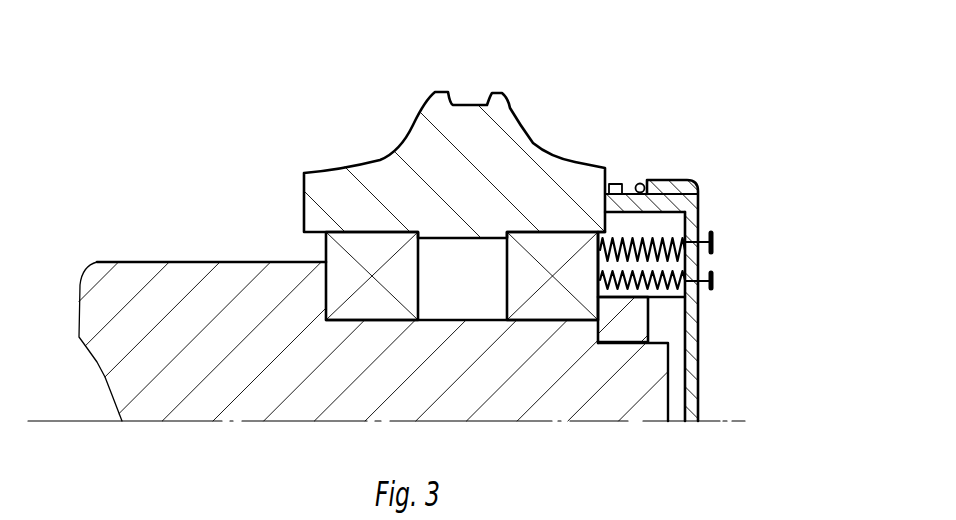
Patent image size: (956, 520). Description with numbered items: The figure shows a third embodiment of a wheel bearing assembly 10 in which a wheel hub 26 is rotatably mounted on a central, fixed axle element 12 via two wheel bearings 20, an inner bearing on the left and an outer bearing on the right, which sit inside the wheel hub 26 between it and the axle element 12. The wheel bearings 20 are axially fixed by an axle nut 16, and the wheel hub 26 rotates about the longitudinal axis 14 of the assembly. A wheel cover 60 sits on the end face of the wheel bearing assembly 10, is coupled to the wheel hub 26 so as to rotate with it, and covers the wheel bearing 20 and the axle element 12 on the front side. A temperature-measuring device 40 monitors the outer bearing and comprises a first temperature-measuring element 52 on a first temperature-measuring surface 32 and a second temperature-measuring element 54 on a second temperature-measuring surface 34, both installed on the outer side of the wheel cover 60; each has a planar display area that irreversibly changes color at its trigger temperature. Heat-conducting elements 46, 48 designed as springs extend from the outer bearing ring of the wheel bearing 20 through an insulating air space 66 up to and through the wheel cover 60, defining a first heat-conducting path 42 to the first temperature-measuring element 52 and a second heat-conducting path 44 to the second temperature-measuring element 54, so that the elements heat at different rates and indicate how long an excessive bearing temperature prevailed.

The wheel bearing assembly 10 is at (130, 80).
The axle element 12 is at (203, 408).
The longitudinal axis 14 is at (558, 414).
The axle nut 16 is at (637, 328).
The wheel bearings 20 is at (362, 243).
The wheel hub 26 is at (313, 187).
The first temperature-measuring surface 32 is at (712, 232).
The second temperature-measuring surface 34 is at (712, 290).
The temperature-measuring device 40 is at (763, 208).
The first heat-conducting path 42 is at (657, 248).
The second heat-conducting path 44 is at (670, 293).
The heat-conducting element 46 is at (642, 249).
The heat-conducting element 48 is at (642, 280).
The first temperature-measuring element 52 is at (714, 243).
The second temperature-measuring element 54 is at (714, 282).
The wheel cover 60 is at (692, 380).
The air space 66 is at (628, 225).